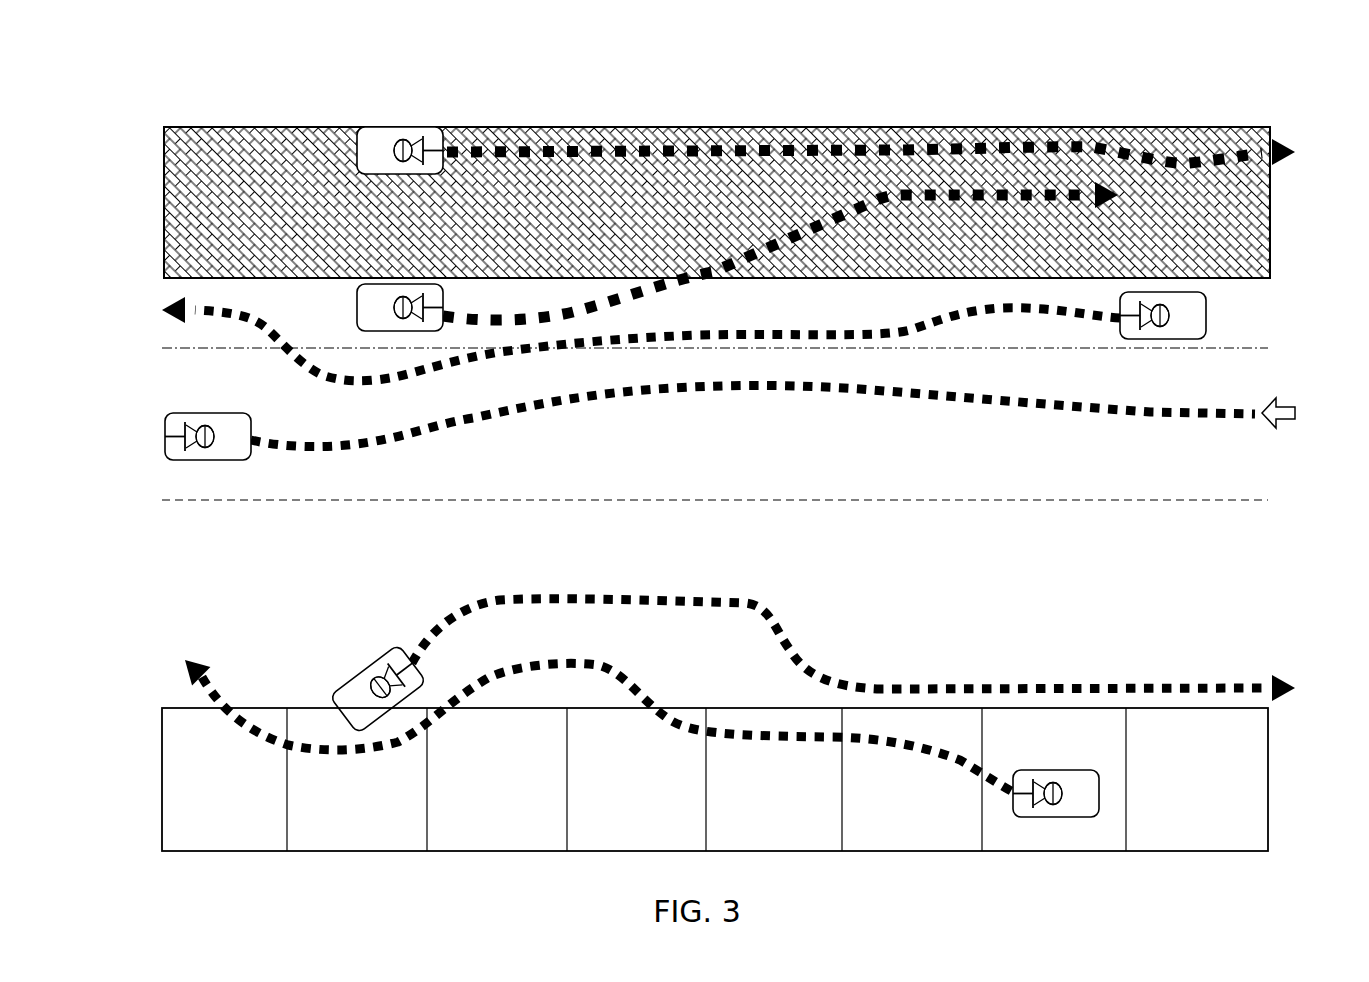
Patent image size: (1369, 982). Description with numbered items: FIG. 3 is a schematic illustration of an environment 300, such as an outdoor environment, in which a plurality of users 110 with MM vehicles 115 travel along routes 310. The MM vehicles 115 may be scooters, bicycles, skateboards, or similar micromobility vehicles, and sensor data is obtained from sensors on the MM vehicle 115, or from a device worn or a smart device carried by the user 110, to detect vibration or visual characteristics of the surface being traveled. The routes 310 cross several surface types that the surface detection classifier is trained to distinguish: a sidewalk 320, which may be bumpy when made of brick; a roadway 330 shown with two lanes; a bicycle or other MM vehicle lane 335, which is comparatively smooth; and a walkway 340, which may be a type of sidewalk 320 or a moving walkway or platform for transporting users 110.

The environment 300 is at (677, 29).
The route 310 is at (1291, 133).
The MM vehicle 115 is at (364, 124).
The user 110 is at (413, 123).
The sidewalk 320 is at (224, 125).
The roadway 330 is at (677, 463).
The bicycle or other MM vehicle lane 335 is at (545, 310).
The walkway 340 is at (327, 800).